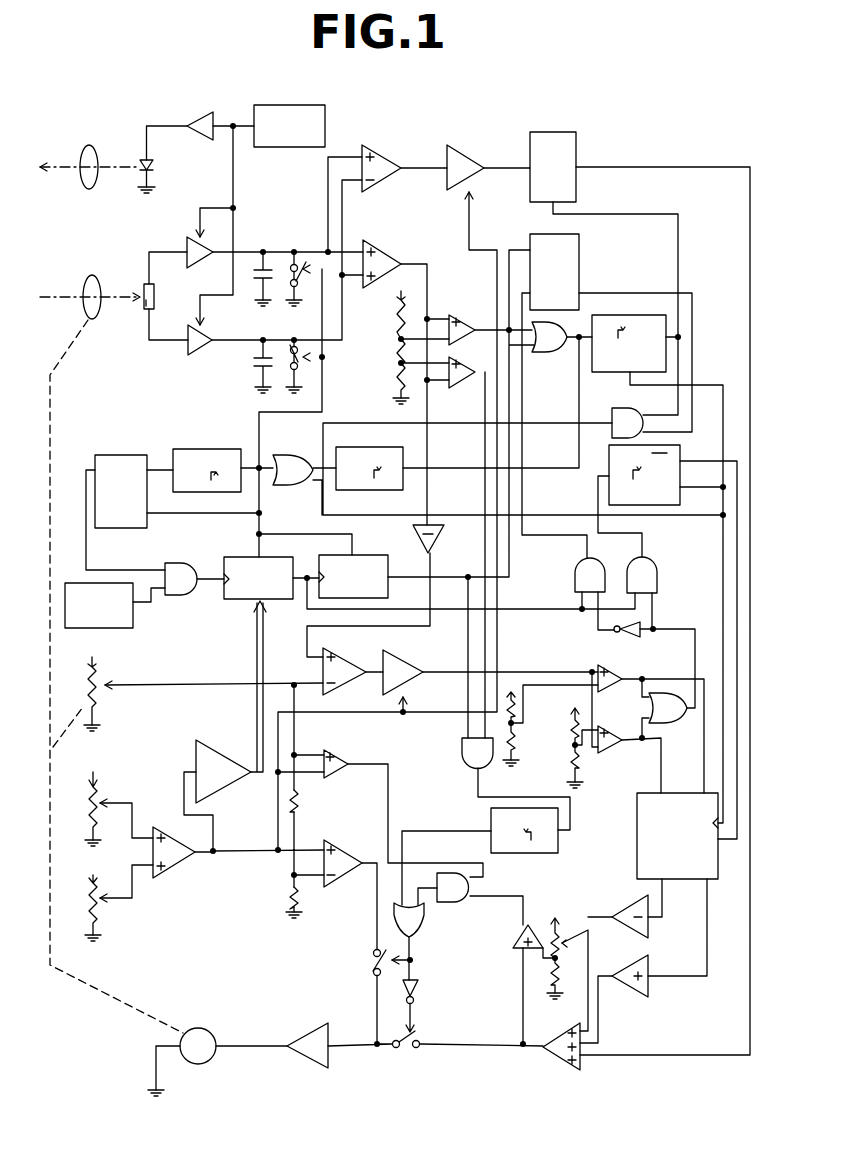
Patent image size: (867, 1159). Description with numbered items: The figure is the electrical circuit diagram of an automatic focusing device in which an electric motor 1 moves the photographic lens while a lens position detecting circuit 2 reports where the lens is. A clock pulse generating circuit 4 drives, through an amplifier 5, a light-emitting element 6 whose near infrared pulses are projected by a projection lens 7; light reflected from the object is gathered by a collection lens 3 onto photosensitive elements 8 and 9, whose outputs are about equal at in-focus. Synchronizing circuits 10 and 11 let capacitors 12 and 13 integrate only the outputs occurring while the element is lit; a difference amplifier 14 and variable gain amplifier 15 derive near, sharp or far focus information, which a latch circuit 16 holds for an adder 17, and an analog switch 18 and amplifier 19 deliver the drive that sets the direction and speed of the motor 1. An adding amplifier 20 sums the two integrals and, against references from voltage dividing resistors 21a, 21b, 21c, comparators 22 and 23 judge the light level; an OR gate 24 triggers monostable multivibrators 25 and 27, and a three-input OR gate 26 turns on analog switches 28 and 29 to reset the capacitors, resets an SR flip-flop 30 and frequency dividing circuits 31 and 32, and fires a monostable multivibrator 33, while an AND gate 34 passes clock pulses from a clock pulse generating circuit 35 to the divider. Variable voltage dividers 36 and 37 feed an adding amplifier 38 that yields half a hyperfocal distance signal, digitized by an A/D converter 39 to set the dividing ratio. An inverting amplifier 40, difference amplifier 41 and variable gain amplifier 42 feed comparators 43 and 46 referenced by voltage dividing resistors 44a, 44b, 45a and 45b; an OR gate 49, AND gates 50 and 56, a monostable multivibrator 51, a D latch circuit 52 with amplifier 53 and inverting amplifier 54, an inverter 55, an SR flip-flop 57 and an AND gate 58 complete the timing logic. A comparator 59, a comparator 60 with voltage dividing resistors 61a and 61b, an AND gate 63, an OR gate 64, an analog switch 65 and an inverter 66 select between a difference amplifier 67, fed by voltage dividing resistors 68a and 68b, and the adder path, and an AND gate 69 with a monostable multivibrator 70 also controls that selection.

The electric motor 1 is at (212, 1037).
The lens position detecting circuit 2 is at (97, 684).
The collection lens 3 is at (98, 278).
The clock pulse generating circuit 4 is at (290, 105).
The amplifier 5 is at (196, 112).
The light-emitting element 6 is at (155, 165).
The projection lens 7 is at (97, 150).
The photosensitive element 8 is at (155, 290).
The photosensitive element 9 is at (144, 311).
The synchronizing circuit 10 is at (190, 240).
The synchronizing circuit 11 is at (188, 350).
The capacitor 12 is at (262, 264).
The capacitor 13 is at (261, 362).
The difference amplifier 14 is at (395, 160).
The variable gain amplifier 15 is at (470, 152).
The latch circuit 16 is at (578, 148).
The adder 17 is at (553, 1065).
The analog switch 18 is at (412, 1055).
The amplifier 19 is at (295, 1064).
The adding amplifier 20 is at (383, 258).
The voltage dividing resistor 21a is at (395, 312).
The voltage dividing resistor 21b is at (397, 340).
The voltage dividing resistor 21c is at (396, 375).
The comparator 22 is at (467, 382).
The comparator 23 is at (464, 318).
The 2-input OR gate 24 is at (547, 352).
The monostable multivibrator 25 is at (384, 490).
The 3-input OR gate 26 is at (290, 455).
The monostable multivibrator 27 is at (606, 375).
The analog switch 28 is at (307, 262).
The analog switch 29 is at (292, 345).
The SR flip-flop 30 is at (118, 455).
The frequency dividing circuit 31 is at (238, 557).
The frequency dividing circuit 32 is at (358, 555).
The monostable multivibrator 33 is at (207, 449).
The 2-input AND gate 34 is at (180, 563).
The clock pulse generating circuit 35 is at (133, 620).
The variable voltage divider 36 is at (97, 790).
The variable voltage divider 37 is at (97, 912).
The adding amplifier 38 is at (186, 866).
The A/D converter 39 is at (226, 750).
The inverting amplifier 40 is at (437, 540).
The difference amplifier 41 is at (349, 662).
The variable gain amplifier 42 is at (410, 662).
The comparator 43 is at (612, 686).
The voltage dividing resistor 44a is at (516, 705).
The voltage dividing resistor 44b is at (513, 742).
The voltage dividing resistor 45a is at (572, 730).
The voltage dividing resistor 45b is at (572, 765).
The comparator 46 is at (610, 752).
The 2-input OR gate 49 is at (680, 720).
The 2-input AND gate 50 is at (657, 580).
The monostable multivibrator 51 is at (674, 447).
The D latch circuit 52 is at (637, 830).
The amplifier 53 is at (632, 990).
The inverting amplifier 54 is at (632, 902).
The inverter 55 is at (636, 640).
The 2-input AND gate 56 is at (575, 578).
The SR flip-flop 57 is at (579, 260).
The 2-input AND gate 58 is at (630, 404).
The comparator 59 is at (346, 758).
The comparator 60 is at (514, 942).
The voltage dividing resistor 61a is at (572, 942).
The voltage dividing resistor 61b is at (550, 970).
The 2-input AND gate 63 is at (460, 902).
The 2-input OR gate 64 is at (424, 935).
The analog switch 65 is at (370, 962).
The inverter 66 is at (418, 986).
The difference amplifier 67 is at (360, 840).
The voltage dividing resistor 68a is at (300, 800).
The voltage dividing resistor 68b is at (300, 898).
The 2-input AND gate 69 is at (460, 750).
The monostable multivibrator 70 is at (540, 853).